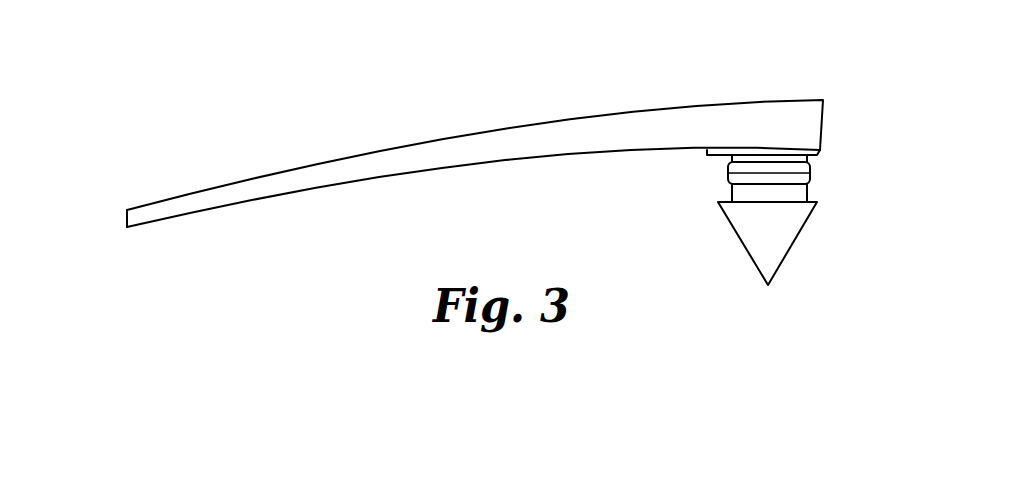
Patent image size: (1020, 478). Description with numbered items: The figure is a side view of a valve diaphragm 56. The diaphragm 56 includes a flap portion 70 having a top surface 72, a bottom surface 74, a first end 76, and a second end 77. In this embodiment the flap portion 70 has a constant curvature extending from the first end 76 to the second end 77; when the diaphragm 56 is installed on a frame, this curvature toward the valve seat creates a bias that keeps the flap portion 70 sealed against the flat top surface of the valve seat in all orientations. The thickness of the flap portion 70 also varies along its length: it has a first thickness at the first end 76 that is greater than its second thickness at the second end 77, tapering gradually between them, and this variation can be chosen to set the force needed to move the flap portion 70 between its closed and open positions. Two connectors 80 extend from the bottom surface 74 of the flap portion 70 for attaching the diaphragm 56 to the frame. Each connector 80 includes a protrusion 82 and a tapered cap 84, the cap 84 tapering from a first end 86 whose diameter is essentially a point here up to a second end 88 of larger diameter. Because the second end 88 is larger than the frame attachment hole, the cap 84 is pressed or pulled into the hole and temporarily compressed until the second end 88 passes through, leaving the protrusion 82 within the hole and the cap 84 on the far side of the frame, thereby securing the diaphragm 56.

The valve diaphragm 56 is at (436, 86).
The flap portion 70 is at (620, 124).
The top surface 72 is at (530, 125).
The bottom surface 74 is at (534, 158).
The first end 76 is at (824, 116).
The second end 77 is at (87, 223).
The connector 80 is at (731, 193).
The protrusion 82 is at (808, 180).
The tapered cap 84 is at (788, 235).
The first end 86 is at (770, 286).
The second end 88 is at (817, 203).